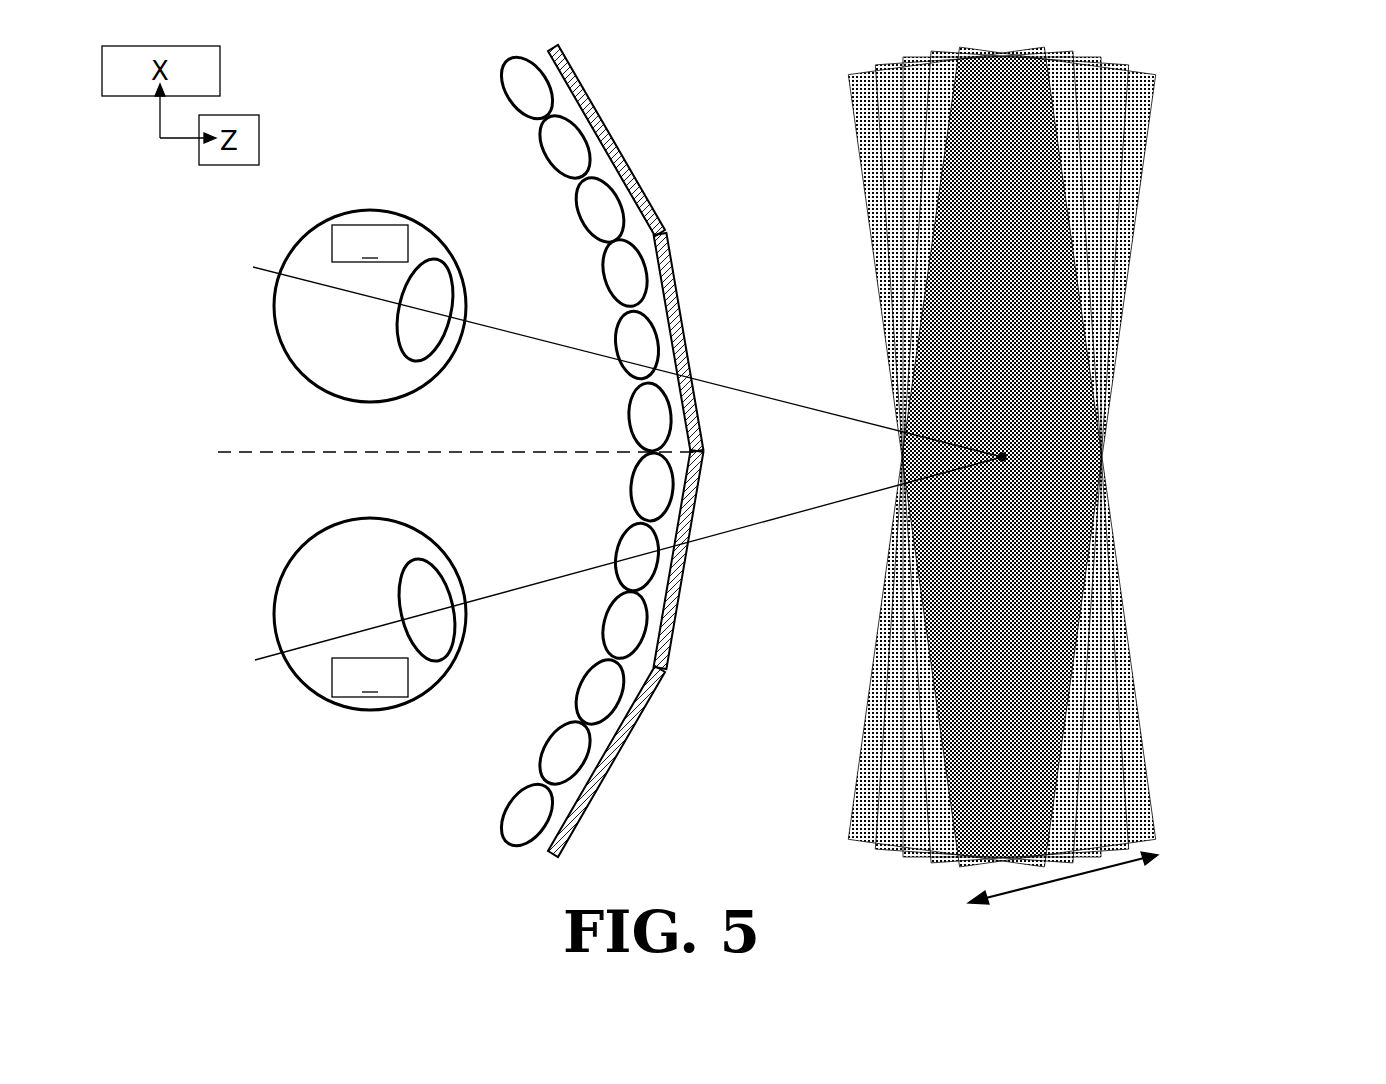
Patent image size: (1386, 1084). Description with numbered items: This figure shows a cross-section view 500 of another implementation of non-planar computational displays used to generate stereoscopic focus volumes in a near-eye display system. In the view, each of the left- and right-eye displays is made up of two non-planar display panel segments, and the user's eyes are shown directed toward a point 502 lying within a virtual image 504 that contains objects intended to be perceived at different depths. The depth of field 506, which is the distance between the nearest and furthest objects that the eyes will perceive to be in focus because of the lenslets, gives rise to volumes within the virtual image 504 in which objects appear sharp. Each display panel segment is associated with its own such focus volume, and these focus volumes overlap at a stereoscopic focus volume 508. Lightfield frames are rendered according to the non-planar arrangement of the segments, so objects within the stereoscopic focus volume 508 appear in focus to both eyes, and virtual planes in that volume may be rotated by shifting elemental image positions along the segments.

The cross-section view 500 is at (286, 79).
The point 502 is at (1002, 457).
The virtual image 504 is at (1291, 102).
The depth of field 506 is at (1068, 878).
The stereoscopic focus volume 508 is at (1077, 465).